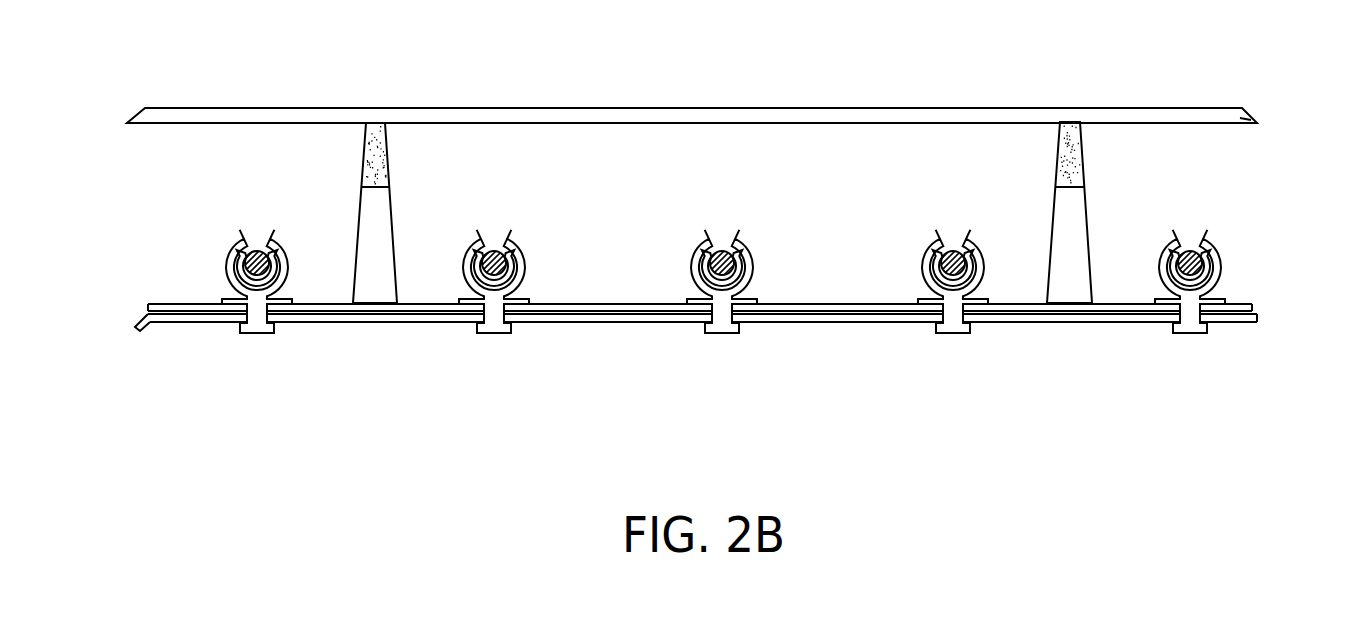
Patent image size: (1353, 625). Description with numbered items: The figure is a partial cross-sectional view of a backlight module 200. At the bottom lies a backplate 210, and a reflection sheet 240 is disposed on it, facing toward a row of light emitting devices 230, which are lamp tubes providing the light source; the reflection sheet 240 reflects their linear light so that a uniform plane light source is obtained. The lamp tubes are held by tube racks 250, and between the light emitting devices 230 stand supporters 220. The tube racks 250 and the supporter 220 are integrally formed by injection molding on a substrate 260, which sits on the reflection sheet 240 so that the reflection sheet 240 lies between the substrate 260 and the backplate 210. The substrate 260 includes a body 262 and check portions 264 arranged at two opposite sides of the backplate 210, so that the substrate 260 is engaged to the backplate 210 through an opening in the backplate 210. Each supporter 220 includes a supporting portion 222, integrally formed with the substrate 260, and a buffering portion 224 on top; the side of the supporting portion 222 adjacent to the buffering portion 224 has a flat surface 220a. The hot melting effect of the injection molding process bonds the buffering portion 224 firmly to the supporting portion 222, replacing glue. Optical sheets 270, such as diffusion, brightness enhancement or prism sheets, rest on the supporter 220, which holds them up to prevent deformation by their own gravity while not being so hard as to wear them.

The backlight module 200 is at (1248, 393).
The backplate 210 is at (1256, 316).
The supporter 220 is at (95, 140).
The flat surface 220a is at (374, 184).
The supporting portion 222 is at (372, 228).
The buffering portion 224 is at (380, 158).
The light emitting devices 230 is at (1188, 250).
The reflection sheet 240 is at (1252, 307).
The tube racks 250 is at (1212, 250).
The substrate 260 is at (333, 403).
The body 262 is at (303, 305).
The check portions 264 is at (253, 334).
The optical sheets 270 is at (1253, 116).